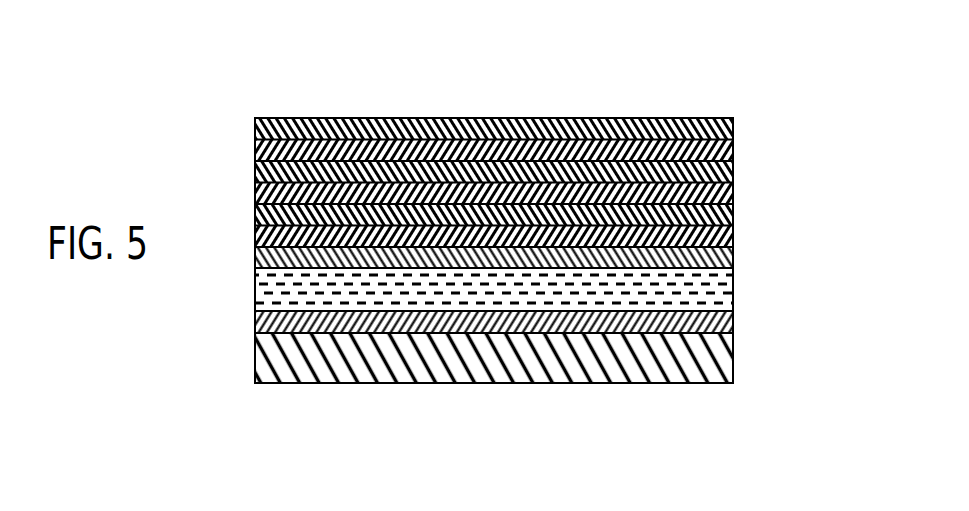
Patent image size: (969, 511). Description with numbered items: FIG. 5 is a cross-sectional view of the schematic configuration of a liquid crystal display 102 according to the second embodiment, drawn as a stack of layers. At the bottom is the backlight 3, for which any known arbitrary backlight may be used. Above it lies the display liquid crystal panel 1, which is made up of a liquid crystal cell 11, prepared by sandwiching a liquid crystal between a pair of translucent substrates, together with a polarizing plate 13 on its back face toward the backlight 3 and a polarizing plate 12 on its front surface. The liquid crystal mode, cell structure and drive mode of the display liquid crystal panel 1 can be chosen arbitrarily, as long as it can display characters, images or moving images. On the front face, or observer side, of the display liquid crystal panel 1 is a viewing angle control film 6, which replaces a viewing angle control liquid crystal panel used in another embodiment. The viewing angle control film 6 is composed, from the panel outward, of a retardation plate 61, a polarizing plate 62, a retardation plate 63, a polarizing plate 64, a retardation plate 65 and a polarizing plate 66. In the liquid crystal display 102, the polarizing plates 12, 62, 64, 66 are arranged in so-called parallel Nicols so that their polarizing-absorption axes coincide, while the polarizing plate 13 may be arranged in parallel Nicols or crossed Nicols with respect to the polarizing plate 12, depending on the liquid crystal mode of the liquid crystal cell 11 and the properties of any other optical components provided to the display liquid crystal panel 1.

The liquid crystal display 102 is at (706, 74).
The viewing angle control film 6 is at (837, 102).
The polarizing plate 66 is at (733, 122).
The retardation plate 65 is at (733, 146).
The polarizing plate 64 is at (733, 169).
The retardation plate 63 is at (733, 191).
The polarizing plate 62 is at (733, 214).
The retardation plate 61 is at (733, 238).
The display liquid crystal panel 1 is at (837, 250).
The polarizing plate 12 is at (733, 255).
The liquid crystal cell 11 is at (733, 290).
The polarizing plate 13 is at (733, 326).
The backlight 3 is at (733, 359).